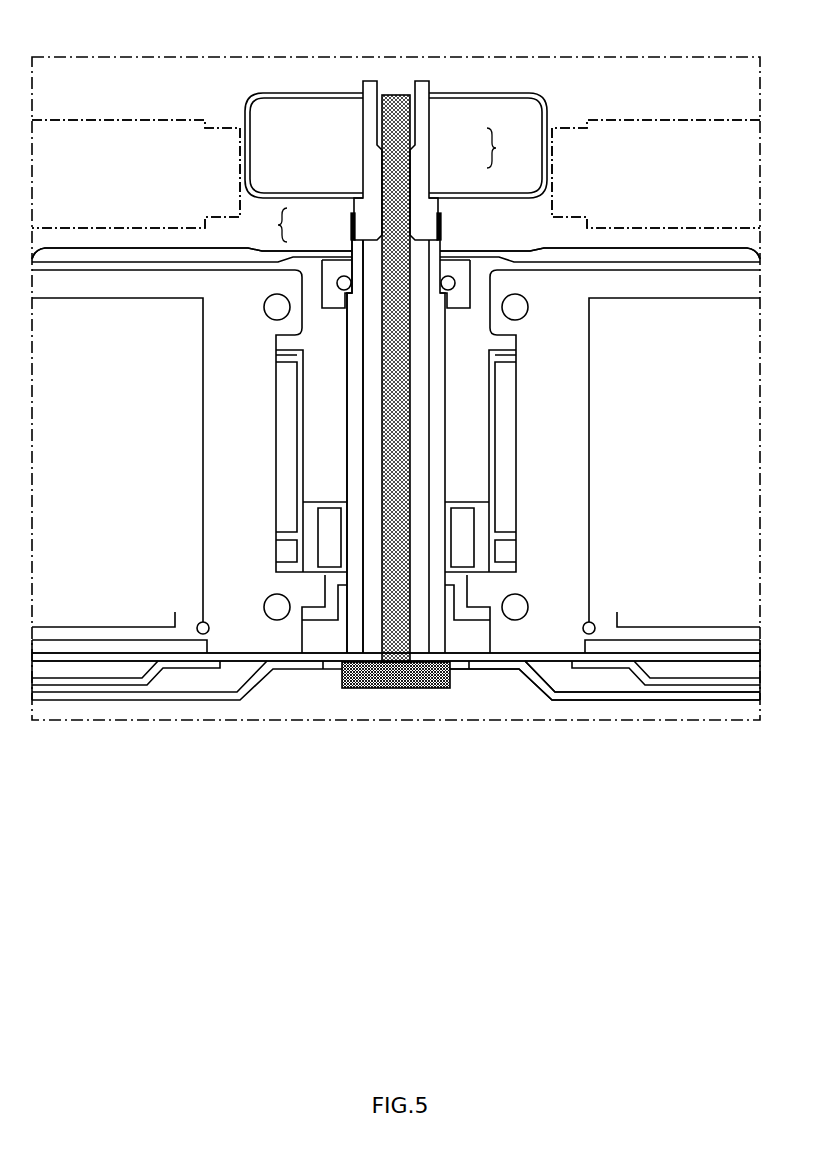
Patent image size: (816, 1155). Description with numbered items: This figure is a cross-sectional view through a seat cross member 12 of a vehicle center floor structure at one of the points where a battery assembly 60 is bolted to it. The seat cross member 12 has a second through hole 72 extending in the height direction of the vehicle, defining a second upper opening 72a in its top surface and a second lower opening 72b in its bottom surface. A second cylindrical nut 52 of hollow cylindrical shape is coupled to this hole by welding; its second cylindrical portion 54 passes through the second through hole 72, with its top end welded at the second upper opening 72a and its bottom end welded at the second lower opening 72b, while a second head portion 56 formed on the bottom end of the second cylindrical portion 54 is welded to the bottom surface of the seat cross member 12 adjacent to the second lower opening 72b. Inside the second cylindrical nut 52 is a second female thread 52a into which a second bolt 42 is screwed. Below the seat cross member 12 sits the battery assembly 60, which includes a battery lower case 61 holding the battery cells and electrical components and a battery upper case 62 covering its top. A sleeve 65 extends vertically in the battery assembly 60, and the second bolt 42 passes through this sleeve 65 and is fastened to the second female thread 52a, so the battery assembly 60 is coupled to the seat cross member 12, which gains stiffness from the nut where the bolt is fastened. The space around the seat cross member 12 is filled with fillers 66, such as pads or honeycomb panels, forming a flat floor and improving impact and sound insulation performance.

The seat cross member 12 is at (473, 97).
The second bolt 42 is at (393, 690).
The second cylindrical nut 52 is at (266, 225).
The second female thread 52a is at (375, 126).
The second cylindrical portion 54 is at (363, 142).
The second head portion 56 is at (352, 225).
The battery assembly 60 is at (657, 700).
The battery lower case 61 is at (581, 702).
The battery upper case 62 is at (618, 248).
The sleeve 65 is at (343, 637).
The filler 66 is at (125, 120).
The second through hole 72 is at (504, 148).
The second upper opening 72a is at (422, 105).
The second lower opening 72b is at (427, 182).